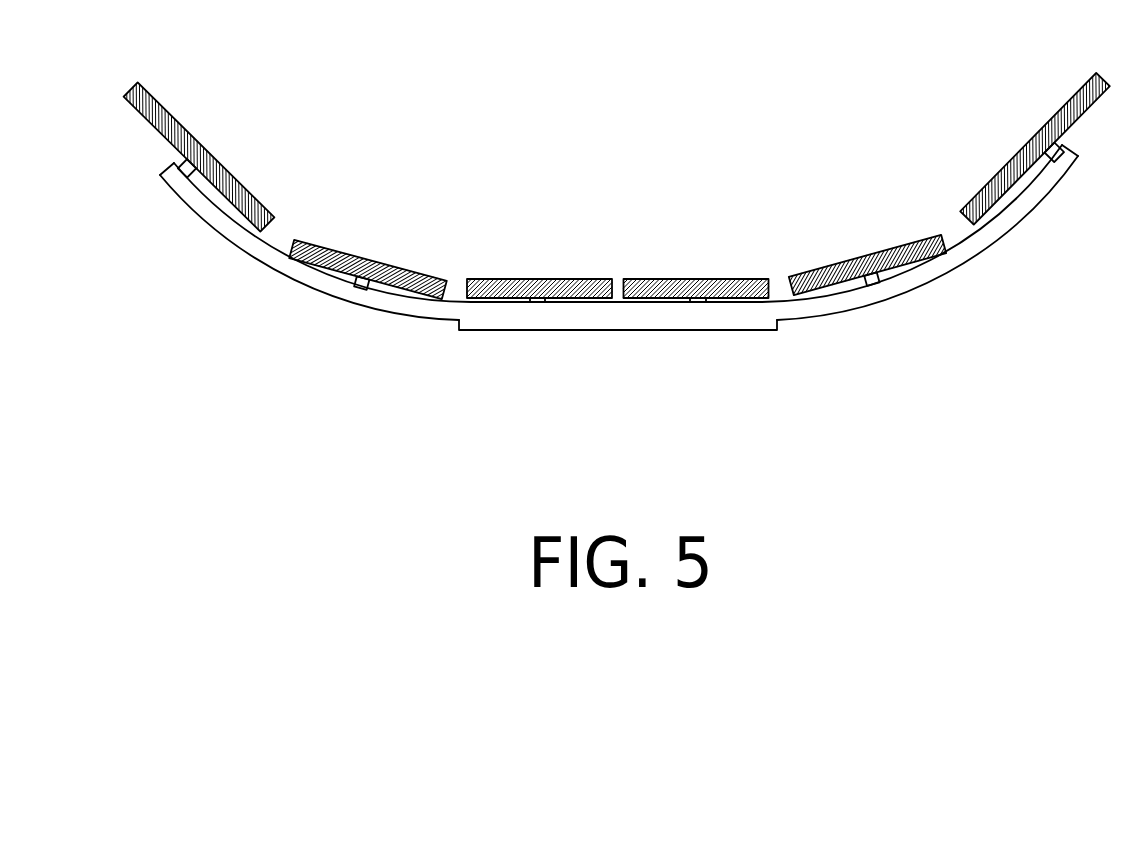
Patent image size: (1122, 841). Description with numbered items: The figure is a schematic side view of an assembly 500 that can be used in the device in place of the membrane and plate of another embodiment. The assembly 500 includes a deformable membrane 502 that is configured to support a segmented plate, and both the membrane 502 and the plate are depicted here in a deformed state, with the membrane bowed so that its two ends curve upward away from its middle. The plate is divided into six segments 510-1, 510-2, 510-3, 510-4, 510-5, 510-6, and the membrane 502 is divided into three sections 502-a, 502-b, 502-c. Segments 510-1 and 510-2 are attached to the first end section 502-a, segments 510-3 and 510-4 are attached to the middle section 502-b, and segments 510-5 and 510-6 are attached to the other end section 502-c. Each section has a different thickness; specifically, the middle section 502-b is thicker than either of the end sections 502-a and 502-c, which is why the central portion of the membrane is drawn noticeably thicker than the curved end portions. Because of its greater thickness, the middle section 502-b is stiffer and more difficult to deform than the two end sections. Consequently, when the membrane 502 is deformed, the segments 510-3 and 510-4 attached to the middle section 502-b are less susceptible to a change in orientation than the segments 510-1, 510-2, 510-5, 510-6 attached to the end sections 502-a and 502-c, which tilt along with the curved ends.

The assembly 500 is at (606, 246).
The deformable membrane 502 is at (585, 281).
The end section of membrane 502-a is at (247, 253).
The middle section of membrane 502-b is at (660, 320).
The end section of membrane 502-c is at (944, 258).
The plate segment 510-1 is at (185, 128).
The plate segment 510-2 is at (368, 254).
The plate segment 510-3 is at (513, 283).
The plate segment 510-4 is at (683, 288).
The plate segment 510-5 is at (856, 258).
The plate segment 510-6 is at (1030, 140).